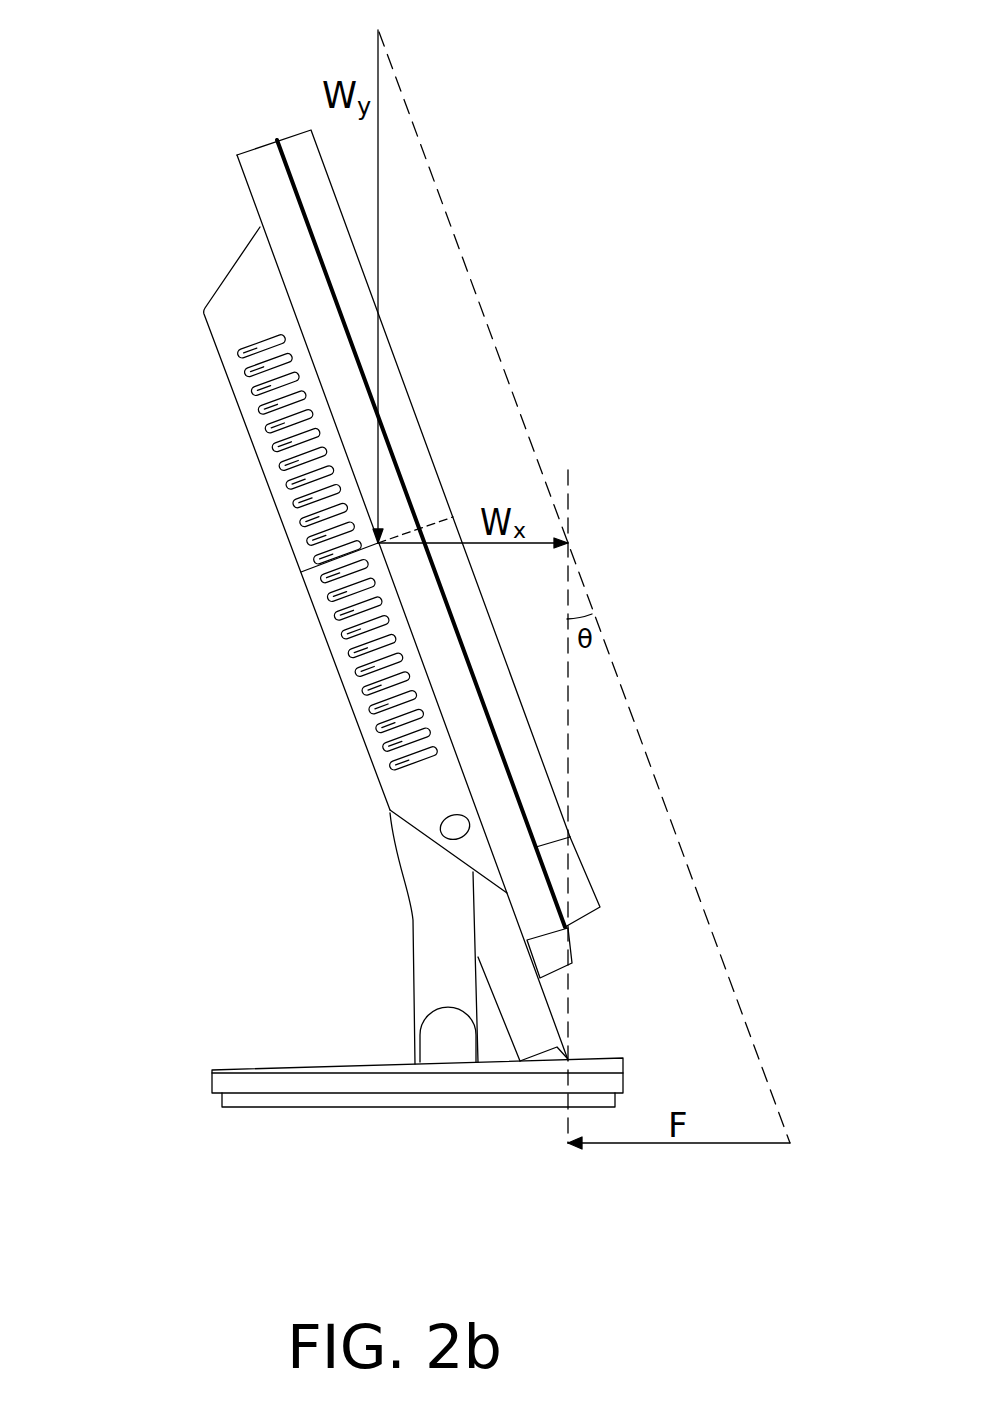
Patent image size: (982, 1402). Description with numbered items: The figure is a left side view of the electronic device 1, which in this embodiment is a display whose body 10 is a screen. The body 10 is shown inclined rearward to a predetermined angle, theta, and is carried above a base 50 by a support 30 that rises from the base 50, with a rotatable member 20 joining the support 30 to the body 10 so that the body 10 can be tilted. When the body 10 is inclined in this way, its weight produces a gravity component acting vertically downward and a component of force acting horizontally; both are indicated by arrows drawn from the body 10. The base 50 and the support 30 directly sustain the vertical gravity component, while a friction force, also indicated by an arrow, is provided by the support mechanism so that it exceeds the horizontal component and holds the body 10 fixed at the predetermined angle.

The electronic device 1 is at (120, 78).
The body 10 is at (272, 185).
The rotatable member 20 is at (530, 1015).
The support 30 is at (435, 962).
The base 50 is at (232, 1082).